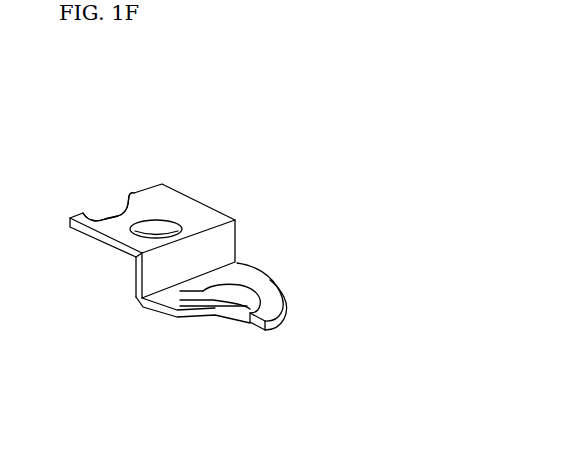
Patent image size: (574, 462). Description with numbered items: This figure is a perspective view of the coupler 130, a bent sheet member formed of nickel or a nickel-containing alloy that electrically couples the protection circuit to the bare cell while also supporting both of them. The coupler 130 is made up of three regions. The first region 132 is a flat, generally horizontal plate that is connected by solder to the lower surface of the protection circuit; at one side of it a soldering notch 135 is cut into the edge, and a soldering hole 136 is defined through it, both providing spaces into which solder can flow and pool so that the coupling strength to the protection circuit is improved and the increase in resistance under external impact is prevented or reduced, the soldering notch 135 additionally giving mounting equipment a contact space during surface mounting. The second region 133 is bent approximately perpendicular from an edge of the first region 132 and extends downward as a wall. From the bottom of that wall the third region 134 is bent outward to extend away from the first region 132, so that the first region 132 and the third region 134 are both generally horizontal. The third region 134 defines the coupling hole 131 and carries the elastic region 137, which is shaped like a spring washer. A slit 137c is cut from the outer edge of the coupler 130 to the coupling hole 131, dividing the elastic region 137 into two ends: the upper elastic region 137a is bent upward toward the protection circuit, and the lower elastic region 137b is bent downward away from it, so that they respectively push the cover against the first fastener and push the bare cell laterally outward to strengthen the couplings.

The coupler 130 is at (337, 123).
The coupling hole 131 is at (283, 300).
The first region 132 is at (193, 210).
The second region 133 is at (218, 240).
The third region 134 is at (238, 264).
The soldering notch 135 is at (115, 214).
The soldering hole 136 is at (157, 232).
The elastic region 137 is at (249, 338).
The upper elastic region 137a is at (222, 292).
The lower elastic region 137b is at (242, 272).
The slit 137c is at (252, 328).